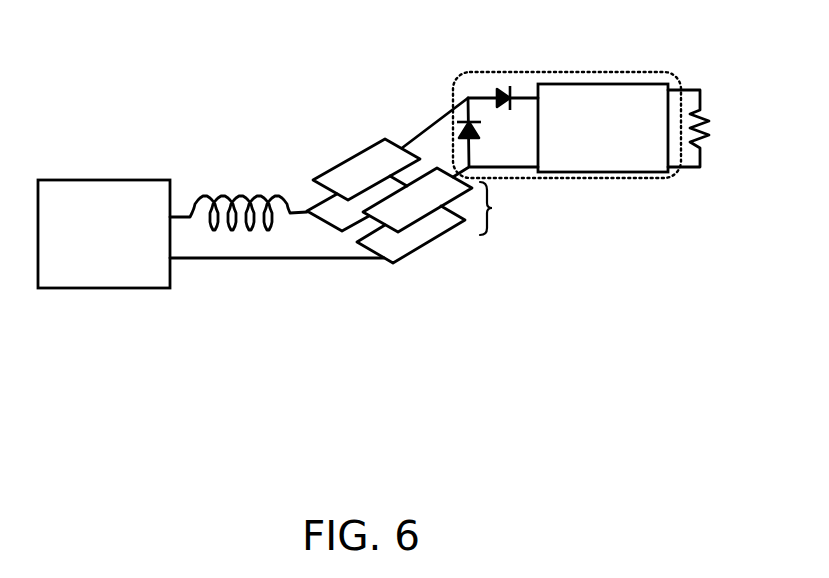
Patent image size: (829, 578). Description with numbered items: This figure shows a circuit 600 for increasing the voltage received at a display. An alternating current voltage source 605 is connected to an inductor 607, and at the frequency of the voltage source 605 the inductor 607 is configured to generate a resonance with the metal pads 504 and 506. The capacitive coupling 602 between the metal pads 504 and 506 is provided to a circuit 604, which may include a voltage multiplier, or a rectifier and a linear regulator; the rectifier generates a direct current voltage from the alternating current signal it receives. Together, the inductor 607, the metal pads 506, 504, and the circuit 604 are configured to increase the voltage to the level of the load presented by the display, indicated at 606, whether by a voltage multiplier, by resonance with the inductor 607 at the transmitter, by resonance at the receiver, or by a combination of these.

The energy harvesting system 600 is at (412, 261).
The alternating current voltage source 605 is at (92, 290).
The inductor 607 is at (238, 192).
The metal pads 504 is at (417, 197).
The metal pads 506 is at (385, 243).
The capacitive coupling 602 is at (515, 208).
The circuit 604 is at (493, 72).
The load presented by the display 606 is at (702, 108).